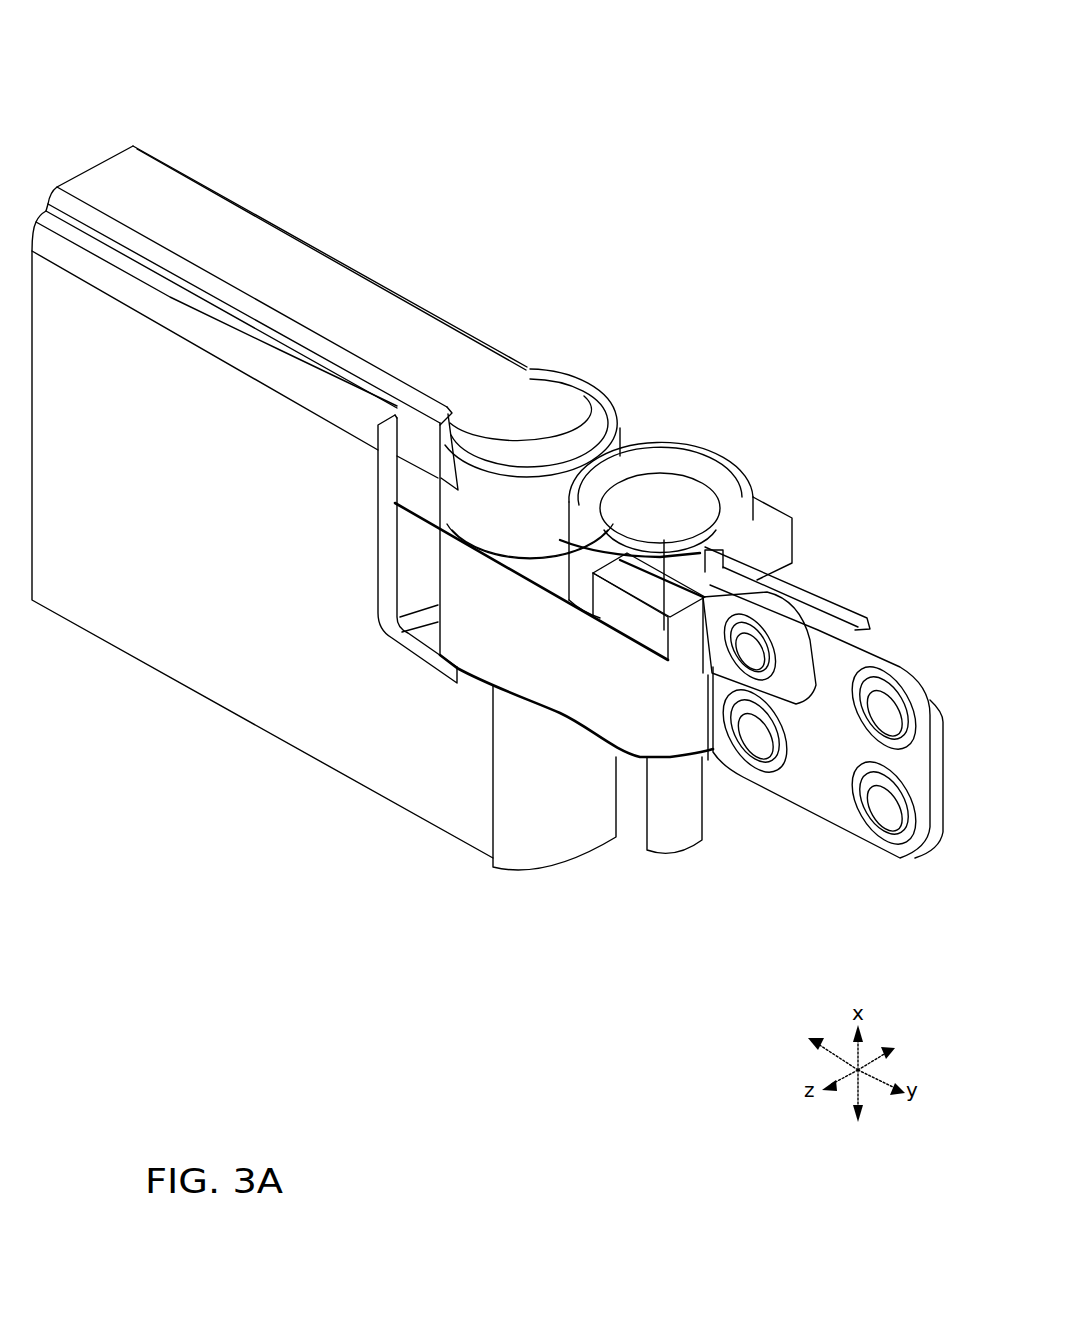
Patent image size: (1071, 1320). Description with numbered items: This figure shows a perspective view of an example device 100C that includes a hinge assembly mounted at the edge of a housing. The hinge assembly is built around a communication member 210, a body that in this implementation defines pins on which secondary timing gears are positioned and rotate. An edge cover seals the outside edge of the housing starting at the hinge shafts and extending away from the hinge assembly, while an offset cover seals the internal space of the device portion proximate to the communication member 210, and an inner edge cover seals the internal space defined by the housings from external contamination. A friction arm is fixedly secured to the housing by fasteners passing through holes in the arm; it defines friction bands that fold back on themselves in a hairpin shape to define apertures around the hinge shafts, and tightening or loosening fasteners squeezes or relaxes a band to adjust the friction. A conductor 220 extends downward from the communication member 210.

The device 100C is at (890, 31).
The communication member 210 is at (647, 732).
The conductor 220 is at (680, 857).